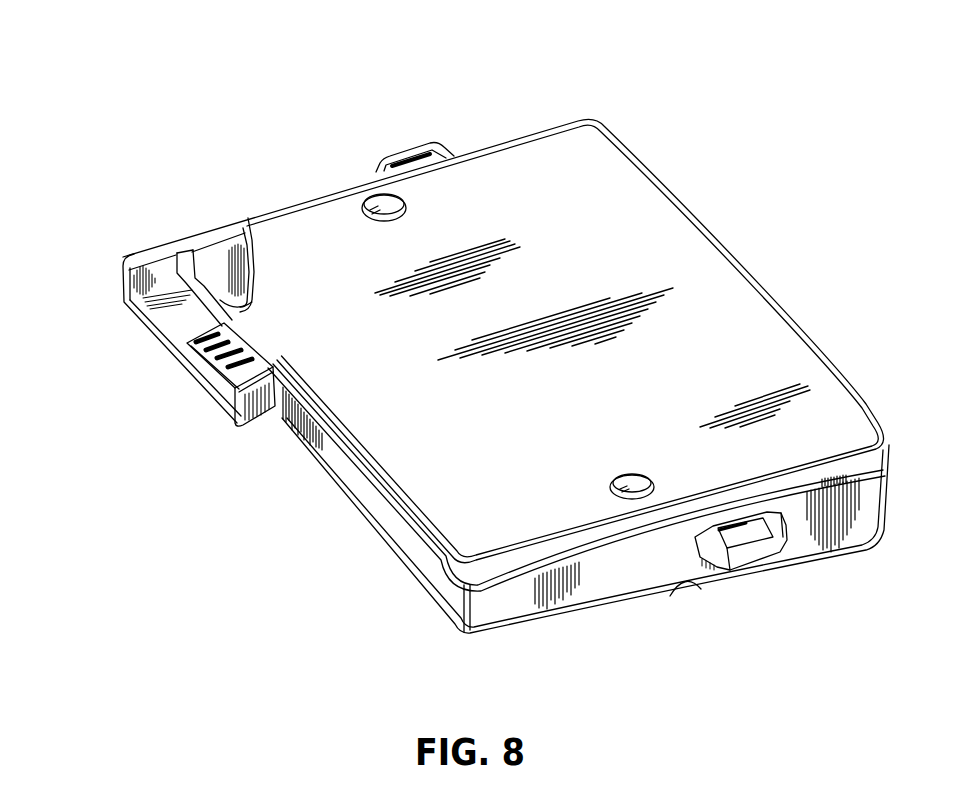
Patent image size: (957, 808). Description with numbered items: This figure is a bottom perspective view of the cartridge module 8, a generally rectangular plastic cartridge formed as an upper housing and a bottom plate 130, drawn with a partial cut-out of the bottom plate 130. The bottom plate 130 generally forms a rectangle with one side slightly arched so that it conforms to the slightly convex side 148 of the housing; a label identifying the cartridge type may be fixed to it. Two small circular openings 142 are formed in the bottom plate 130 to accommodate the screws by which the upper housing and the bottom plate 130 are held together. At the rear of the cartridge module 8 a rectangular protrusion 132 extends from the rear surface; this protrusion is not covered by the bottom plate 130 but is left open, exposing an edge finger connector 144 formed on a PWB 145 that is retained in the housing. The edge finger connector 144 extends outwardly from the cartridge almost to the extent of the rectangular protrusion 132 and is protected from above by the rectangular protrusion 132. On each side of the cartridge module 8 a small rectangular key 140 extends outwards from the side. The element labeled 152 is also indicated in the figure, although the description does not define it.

The cartridge module 8 is at (616, 121).
The bottom plate 130 is at (410, 467).
The rectangular protrusion 132 is at (155, 250).
The small rectangular key 140 is at (418, 160).
The small circular openings 142 is at (375, 200).
The edge finger connector 144 is at (207, 377).
The PWB 145 is at (220, 302).
The slightly convex side 148 is at (750, 262).
The recess end wall 152 is at (177, 283).